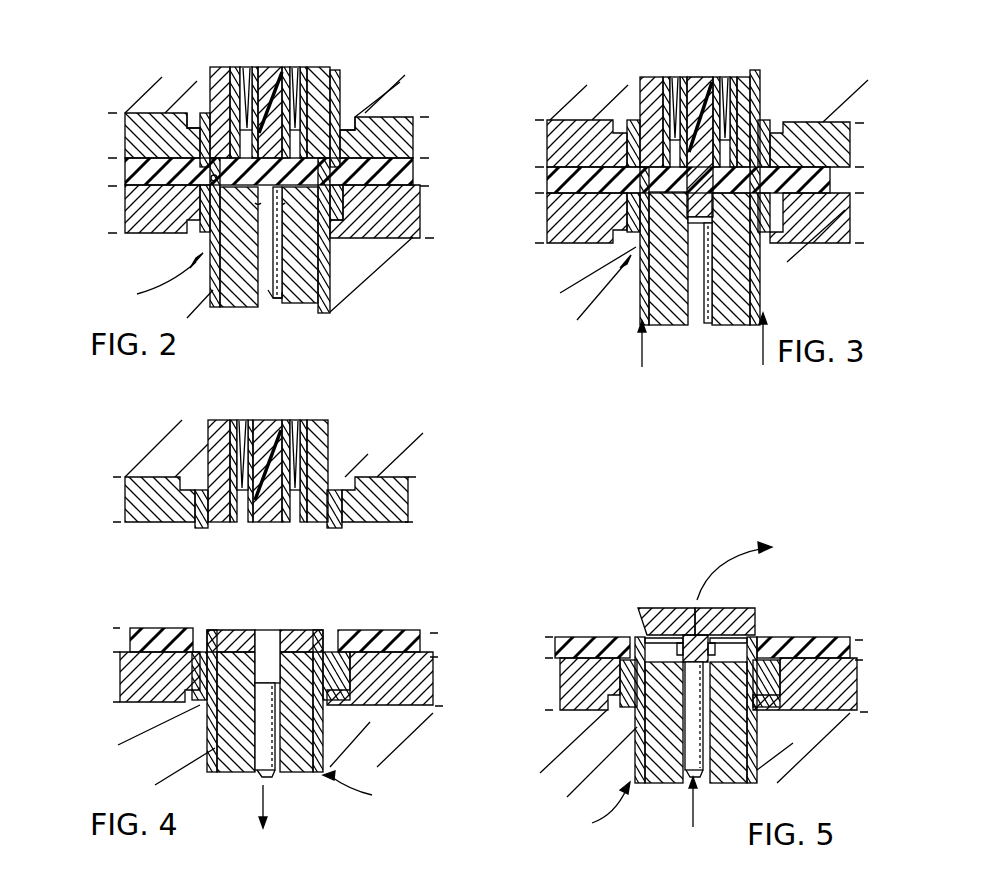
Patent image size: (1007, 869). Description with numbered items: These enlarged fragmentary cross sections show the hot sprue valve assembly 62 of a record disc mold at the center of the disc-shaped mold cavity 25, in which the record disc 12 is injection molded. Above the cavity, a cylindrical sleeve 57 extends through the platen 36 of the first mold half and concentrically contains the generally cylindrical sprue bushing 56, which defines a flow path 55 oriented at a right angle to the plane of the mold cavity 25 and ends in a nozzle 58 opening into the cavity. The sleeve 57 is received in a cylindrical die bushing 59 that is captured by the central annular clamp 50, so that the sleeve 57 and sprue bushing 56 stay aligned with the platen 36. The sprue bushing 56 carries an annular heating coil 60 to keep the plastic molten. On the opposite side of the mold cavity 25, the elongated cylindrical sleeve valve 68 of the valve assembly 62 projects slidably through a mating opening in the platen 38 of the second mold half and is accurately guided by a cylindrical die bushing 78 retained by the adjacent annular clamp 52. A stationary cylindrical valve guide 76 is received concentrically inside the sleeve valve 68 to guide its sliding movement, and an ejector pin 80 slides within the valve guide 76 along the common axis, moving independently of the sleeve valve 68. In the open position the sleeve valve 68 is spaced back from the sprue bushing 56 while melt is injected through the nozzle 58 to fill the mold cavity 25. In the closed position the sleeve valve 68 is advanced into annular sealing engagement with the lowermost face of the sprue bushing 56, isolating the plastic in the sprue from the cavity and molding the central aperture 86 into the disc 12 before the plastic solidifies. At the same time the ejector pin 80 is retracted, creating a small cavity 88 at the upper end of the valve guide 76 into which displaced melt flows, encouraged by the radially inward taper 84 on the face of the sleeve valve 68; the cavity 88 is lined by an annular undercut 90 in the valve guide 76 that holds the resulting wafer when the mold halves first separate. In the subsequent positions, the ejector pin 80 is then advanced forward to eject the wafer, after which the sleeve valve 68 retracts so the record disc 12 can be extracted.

In FIG. 2, the record disc 12 is at (398, 177).
In FIG. 3, the record disc 12 is at (830, 181).
In FIG. 4, the record disc 12 is at (160, 627).
In FIG. 5, the record disc 12 is at (580, 634).
In FIG. 2, the mold cavity 25 is at (398, 162).
In FIG. 3, the mold cavity 25 is at (567, 170).
In FIG. 2, the platen 36 is at (403, 100).
In FIG. 2, the platen 38 is at (368, 248).
In FIG. 2, the annular clamp 50 is at (163, 133).
In FIG. 2, the annular clamp 52 is at (162, 198).
In FIG. 2, the flow path 55 is at (268, 68).
In FIG. 2, the sprue bushing 56 is at (224, 103).
In FIG. 3, the sprue bushing 56 is at (689, 140).
In FIG. 4, the sprue bushing 56 is at (215, 522).
In FIG. 2, the sleeve 57 is at (217, 102).
In FIG. 3, the sleeve 57 is at (748, 85).
In FIG. 2, the nozzle 58 is at (332, 95).
In FIG. 4, the nozzle 58 is at (280, 522).
In FIG. 2, the die bushing 59 is at (188, 117).
In FIG. 3, the die bushing 59 is at (775, 122).
In FIG. 4, the die bushing 59 is at (342, 520).
In FIG. 2, the heating coil 60 is at (308, 68).
In FIG. 2, the hot sprue valve assembly 62 is at (150, 280).
In FIG. 3, the hot sprue valve assembly 62 is at (591, 311).
In FIG. 4, the hot sprue valve assembly 62 is at (362, 792).
In FIG. 5, the hot sprue valve assembly 62 is at (591, 809).
In FIG. 2, the sleeve valve 68 is at (218, 292).
In FIG. 3, the sleeve valve 68 is at (760, 285).
In FIG. 4, the sleeve valve 68 is at (213, 755).
In FIG. 5, the sleeve valve 68 is at (757, 776).
In FIG. 2, the valve guide 76 is at (325, 298).
In FIG. 3, the valve guide 76 is at (759, 306).
In FIG. 4, the valve guide 76 is at (236, 756).
In FIG. 5, the valve guide 76 is at (664, 768).
In FIG. 2, the die bushing 78 is at (205, 235).
In FIG. 3, the die bushing 78 is at (771, 222).
In FIG. 4, the die bushing 78 is at (194, 704).
In FIG. 5, the die bushing 78 is at (780, 697).
In FIG. 2, the ejector pin 80 is at (275, 300).
In FIG. 3, the ejector pin 80 is at (702, 325).
In FIG. 4, the ejector pin 80 is at (276, 756).
In FIG. 5, the ejector pin 80 is at (704, 762).
In FIG. 2, the taper 84 is at (211, 178).
In FIG. 3, the taper 84 is at (647, 165).
In FIG. 4, the taper 84 is at (216, 637).
In FIG. 5, the taper 84 is at (643, 630).
In FIG. 3, the central aperture 86 is at (780, 175).
In FIG. 4, the central aperture 86 is at (341, 642).
In FIG. 5, the central aperture 86 is at (758, 637).
In FIG. 3, the small cavity 88 is at (688, 223).
In FIG. 4, the small cavity 88 is at (259, 657).
In FIG. 3, the annular undercut 90 is at (716, 215).
In FIG. 4, the annular undercut 90 is at (328, 713).
In FIG. 5, the annular undercut 90 is at (746, 723).